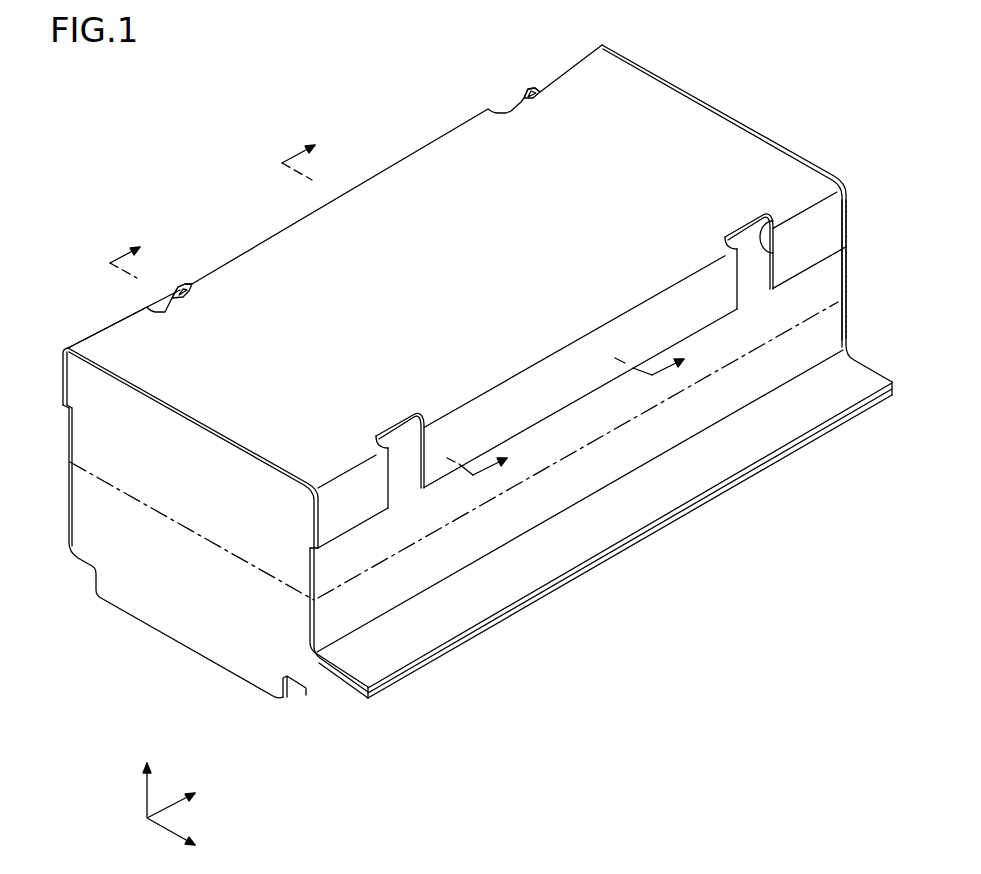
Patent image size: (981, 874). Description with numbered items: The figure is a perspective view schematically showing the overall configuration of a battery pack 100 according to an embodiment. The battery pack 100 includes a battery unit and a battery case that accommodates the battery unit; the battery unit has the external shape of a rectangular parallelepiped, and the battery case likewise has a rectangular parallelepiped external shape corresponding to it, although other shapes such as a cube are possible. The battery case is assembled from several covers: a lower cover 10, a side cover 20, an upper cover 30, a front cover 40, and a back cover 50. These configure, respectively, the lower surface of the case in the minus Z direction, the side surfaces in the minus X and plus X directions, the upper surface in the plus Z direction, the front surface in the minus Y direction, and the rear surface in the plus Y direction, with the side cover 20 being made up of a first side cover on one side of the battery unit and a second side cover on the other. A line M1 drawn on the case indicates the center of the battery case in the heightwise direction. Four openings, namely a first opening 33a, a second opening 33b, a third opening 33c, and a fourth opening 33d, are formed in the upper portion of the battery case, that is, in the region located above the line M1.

The battery pack 100 is at (367, 93).
The lower cover 10 is at (325, 673).
The side cover 20 is at (827, 322).
The upper cover 30 is at (693, 120).
The front cover 40 is at (176, 578).
The back cover 50 is at (848, 270).
The first opening 33a is at (164, 299).
The second opening 33b is at (514, 109).
The third opening 33c is at (420, 450).
The fourth opening 33d is at (762, 220).
The line M1 is at (584, 447).